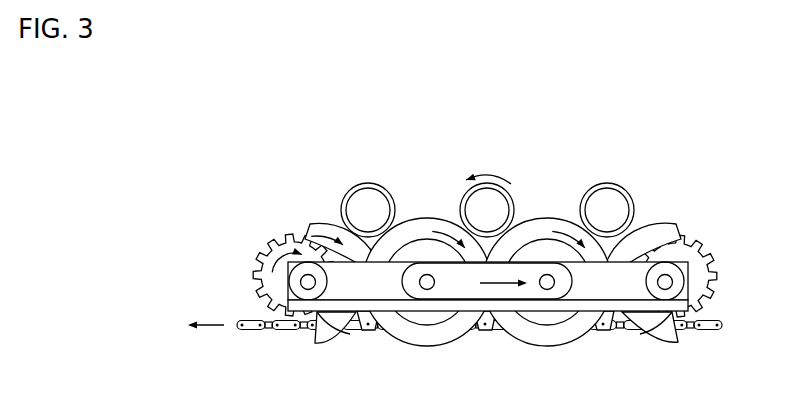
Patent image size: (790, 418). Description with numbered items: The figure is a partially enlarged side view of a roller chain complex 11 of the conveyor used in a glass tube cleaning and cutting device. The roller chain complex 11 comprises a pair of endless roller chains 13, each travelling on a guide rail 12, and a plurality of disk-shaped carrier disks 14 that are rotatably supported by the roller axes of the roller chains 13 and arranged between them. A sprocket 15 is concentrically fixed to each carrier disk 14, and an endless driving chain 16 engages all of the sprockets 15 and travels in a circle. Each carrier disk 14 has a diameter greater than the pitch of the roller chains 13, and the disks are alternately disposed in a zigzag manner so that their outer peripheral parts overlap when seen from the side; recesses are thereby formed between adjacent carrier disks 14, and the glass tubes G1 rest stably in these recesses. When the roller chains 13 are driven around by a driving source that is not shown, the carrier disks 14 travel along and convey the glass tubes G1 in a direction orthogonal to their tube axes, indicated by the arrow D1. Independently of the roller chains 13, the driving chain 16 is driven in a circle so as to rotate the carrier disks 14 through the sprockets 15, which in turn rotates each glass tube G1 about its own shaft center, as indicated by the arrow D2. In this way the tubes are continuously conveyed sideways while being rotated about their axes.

The roller chain complex 11 is at (469, 255).
The guide rail 12 is at (465, 305).
The endless roller chain 13 is at (390, 283).
The carrier disk 14 is at (322, 227).
The sprocket 15 is at (268, 253).
The endless driving chain 16 is at (248, 330).
The glass tube G1 is at (367, 183).
The conveying direction arrow D1 is at (482, 284).
The rotation direction arrow D2 is at (488, 162).